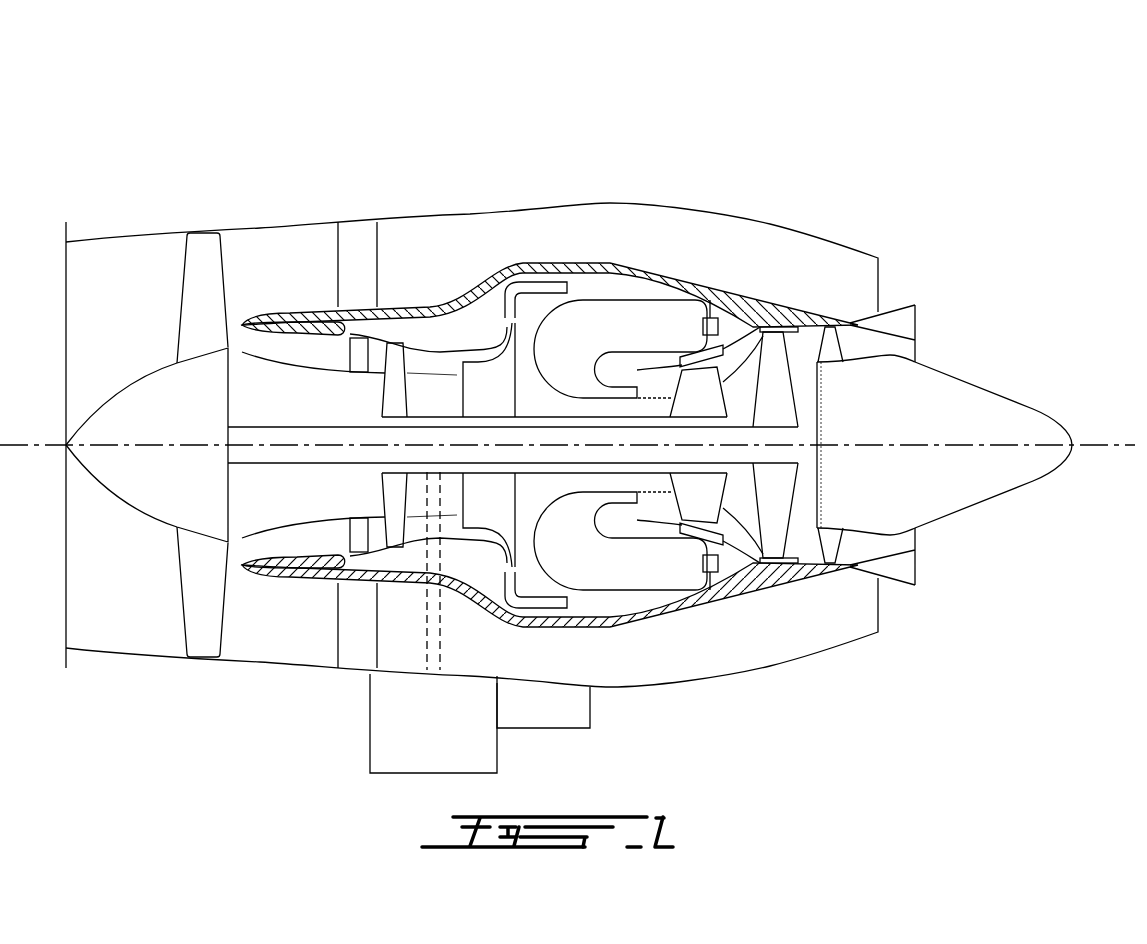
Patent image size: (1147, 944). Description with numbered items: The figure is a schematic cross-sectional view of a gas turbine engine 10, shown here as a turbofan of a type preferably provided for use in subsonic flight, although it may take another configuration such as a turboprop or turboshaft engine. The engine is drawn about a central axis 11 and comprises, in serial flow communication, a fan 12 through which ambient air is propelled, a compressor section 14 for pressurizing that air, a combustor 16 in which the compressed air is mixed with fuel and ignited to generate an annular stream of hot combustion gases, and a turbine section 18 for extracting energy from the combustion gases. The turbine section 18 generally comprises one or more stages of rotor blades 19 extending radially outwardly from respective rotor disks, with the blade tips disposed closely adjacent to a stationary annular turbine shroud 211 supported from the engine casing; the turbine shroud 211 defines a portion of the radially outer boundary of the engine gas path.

The gas turbine engine 10 is at (780, 125).
The engine axis 11 is at (1105, 445).
The fan 12 is at (198, 583).
The compressor section 14 is at (427, 357).
The combustor 16 is at (620, 317).
The turbine section 18 is at (738, 503).
The rotor blades 19 is at (760, 327).
The turbine shroud 211 is at (707, 388).